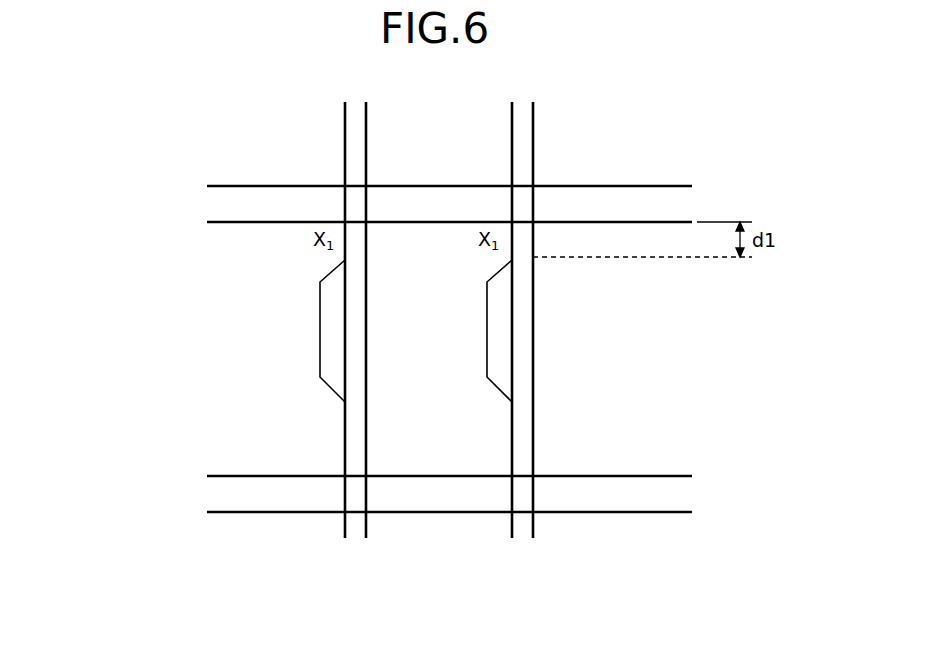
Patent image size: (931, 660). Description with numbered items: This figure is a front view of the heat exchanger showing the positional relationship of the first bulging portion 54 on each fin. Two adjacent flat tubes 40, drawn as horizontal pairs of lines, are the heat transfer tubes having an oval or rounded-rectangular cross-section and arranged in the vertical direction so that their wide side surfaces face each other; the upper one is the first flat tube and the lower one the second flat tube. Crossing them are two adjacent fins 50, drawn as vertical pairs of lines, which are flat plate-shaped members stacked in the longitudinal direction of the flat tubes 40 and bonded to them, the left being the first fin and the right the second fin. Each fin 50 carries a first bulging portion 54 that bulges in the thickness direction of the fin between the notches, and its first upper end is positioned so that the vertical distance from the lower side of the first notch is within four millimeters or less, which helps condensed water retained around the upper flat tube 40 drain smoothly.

The flat tube 40 is at (223, 205).
The fin 50 is at (357, 527).
The first bulging portion 54 is at (332, 333).